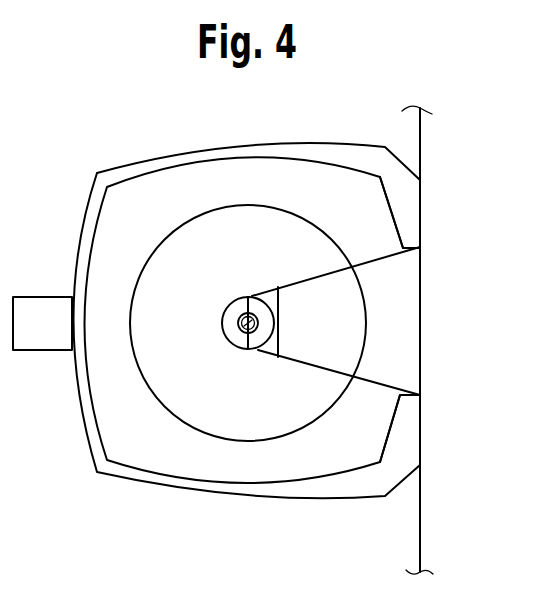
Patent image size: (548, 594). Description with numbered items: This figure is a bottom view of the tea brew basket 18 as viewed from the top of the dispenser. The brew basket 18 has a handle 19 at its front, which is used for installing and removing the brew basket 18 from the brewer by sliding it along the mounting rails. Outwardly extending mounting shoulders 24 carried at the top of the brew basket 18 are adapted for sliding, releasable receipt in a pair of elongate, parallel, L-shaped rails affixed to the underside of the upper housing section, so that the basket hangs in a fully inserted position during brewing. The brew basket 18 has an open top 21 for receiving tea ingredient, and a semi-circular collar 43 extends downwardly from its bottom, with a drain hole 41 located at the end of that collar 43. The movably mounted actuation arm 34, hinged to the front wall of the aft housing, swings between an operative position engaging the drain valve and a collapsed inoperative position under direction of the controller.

The brew basket 18 is at (335, 460).
The handle 19 is at (43, 350).
The open top 21 is at (398, 410).
The mounting shoulders 24 is at (250, 150).
The actuation arm 34 is at (408, 345).
The drain hole 41 is at (240, 316).
The semi-circular collar 43 is at (226, 331).